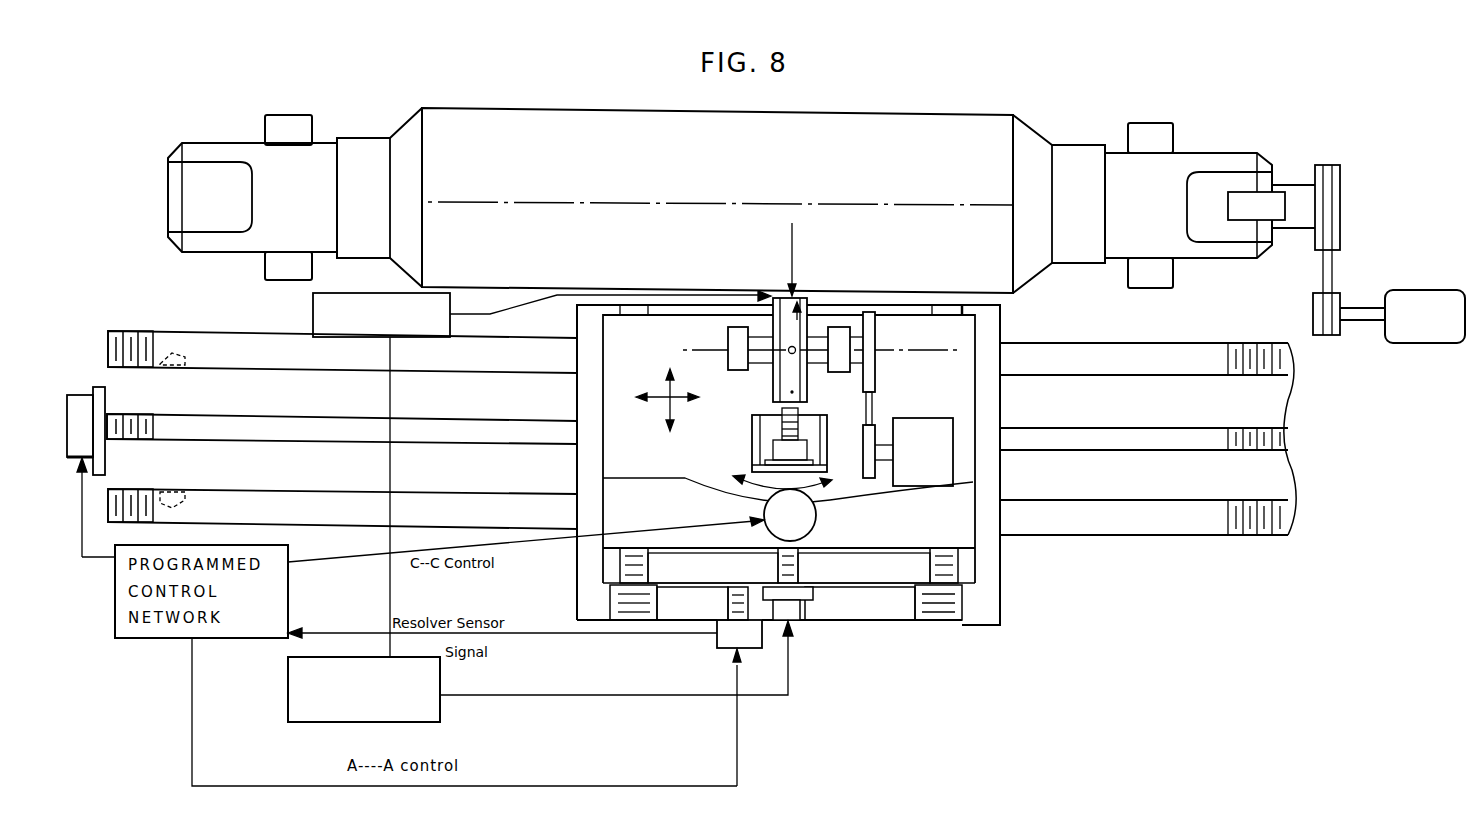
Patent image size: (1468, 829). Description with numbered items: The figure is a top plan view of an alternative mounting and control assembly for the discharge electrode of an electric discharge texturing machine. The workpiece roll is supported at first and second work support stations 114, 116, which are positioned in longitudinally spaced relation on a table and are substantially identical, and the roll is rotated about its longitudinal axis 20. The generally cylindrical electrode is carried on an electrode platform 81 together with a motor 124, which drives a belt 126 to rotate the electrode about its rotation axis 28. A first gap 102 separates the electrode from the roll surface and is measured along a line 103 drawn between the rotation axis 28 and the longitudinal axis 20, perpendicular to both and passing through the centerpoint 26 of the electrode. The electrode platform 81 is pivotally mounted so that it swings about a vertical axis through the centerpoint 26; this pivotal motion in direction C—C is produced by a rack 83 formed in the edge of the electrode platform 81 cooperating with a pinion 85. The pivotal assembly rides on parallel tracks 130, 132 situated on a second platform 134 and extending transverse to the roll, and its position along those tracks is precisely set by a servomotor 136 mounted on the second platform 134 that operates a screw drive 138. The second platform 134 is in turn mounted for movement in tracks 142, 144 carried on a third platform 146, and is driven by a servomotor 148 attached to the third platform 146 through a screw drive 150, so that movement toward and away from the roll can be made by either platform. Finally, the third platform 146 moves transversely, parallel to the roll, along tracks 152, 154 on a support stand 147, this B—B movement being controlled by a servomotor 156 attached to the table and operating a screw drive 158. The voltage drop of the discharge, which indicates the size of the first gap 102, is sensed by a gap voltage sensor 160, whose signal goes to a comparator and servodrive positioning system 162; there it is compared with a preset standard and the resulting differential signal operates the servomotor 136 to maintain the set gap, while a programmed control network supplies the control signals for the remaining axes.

The longitudinal axis 20 is at (847, 203).
The centerpoint 26 is at (789, 353).
The rotation axis 28 is at (893, 352).
The electrode platform 81 is at (648, 463).
The rack 83 is at (830, 500).
The pinion 85 is at (815, 524).
The first gap 102 is at (813, 292).
The line 103 is at (792, 238).
The first work support station 114 is at (312, 130).
The second work support station 116 is at (1173, 128).
The motor 124 is at (933, 418).
The belt 126 is at (876, 410).
The track 130 is at (648, 567).
The track 132 is at (930, 567).
The second platform 134 is at (746, 573).
The servomotor 136 is at (805, 604).
The screw drive 138 is at (798, 567).
The track 142 is at (605, 607).
The track 144 is at (963, 604).
The third platform 146 is at (673, 608).
The support stand 147 is at (244, 476).
The servomotor 148 is at (733, 652).
The screw drive 150 is at (730, 602).
The track 152 is at (325, 503).
The track 154 is at (303, 362).
The servomotor 156 is at (84, 395).
The screw drive 158 is at (148, 417).
The gap voltage sensor 160 is at (313, 306).
The comparator and servodrive positioning system 162 is at (288, 698).